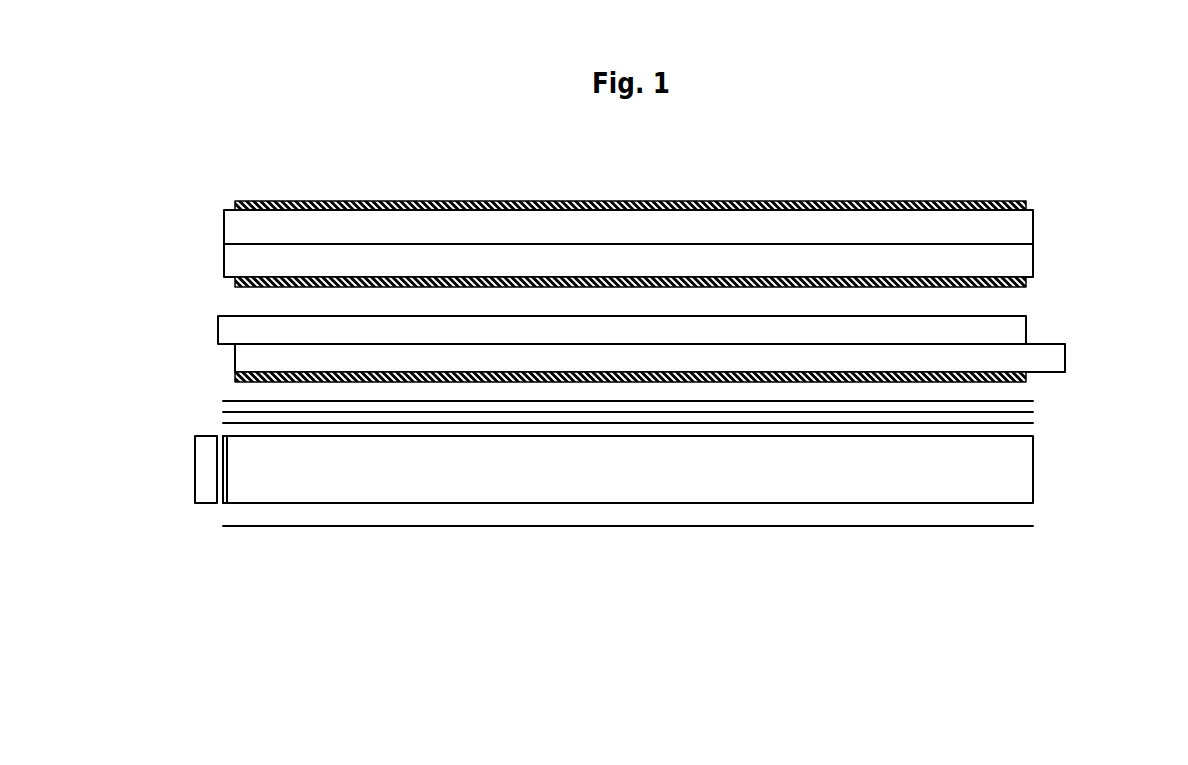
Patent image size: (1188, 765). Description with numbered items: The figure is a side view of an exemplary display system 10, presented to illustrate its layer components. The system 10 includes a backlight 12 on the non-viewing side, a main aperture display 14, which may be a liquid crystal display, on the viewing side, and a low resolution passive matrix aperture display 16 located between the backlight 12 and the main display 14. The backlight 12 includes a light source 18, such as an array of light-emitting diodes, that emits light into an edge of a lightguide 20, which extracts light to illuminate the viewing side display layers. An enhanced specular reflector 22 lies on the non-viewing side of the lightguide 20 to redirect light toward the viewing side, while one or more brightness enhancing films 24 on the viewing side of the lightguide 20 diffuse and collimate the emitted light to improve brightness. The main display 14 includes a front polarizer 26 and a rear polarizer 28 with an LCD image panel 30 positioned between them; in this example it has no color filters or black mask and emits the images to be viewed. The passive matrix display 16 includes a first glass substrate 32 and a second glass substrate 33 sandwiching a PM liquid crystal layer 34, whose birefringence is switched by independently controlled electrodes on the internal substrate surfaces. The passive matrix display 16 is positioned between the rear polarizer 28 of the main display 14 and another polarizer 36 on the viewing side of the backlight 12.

The display system 10 is at (436, 143).
The backlight 12 is at (1083, 395).
The main aperture display 14 is at (1083, 209).
The low resolution passive matrix aperture display 16 is at (1083, 301).
The light source 18 is at (197, 477).
The lightguide 20 is at (228, 504).
The enhanced specular reflector 22 is at (322, 528).
The brightness enhancing films 24 is at (223, 423).
The front polarizer 26 is at (223, 211).
The rear polarizer 28 is at (233, 287).
The LCD image panel 30 is at (223, 246).
The first glass substrate 32 is at (218, 333).
The second glass substrate 33 is at (235, 362).
The PM liquid crystal layer 34 is at (1006, 345).
The polarizer 36 is at (768, 383).